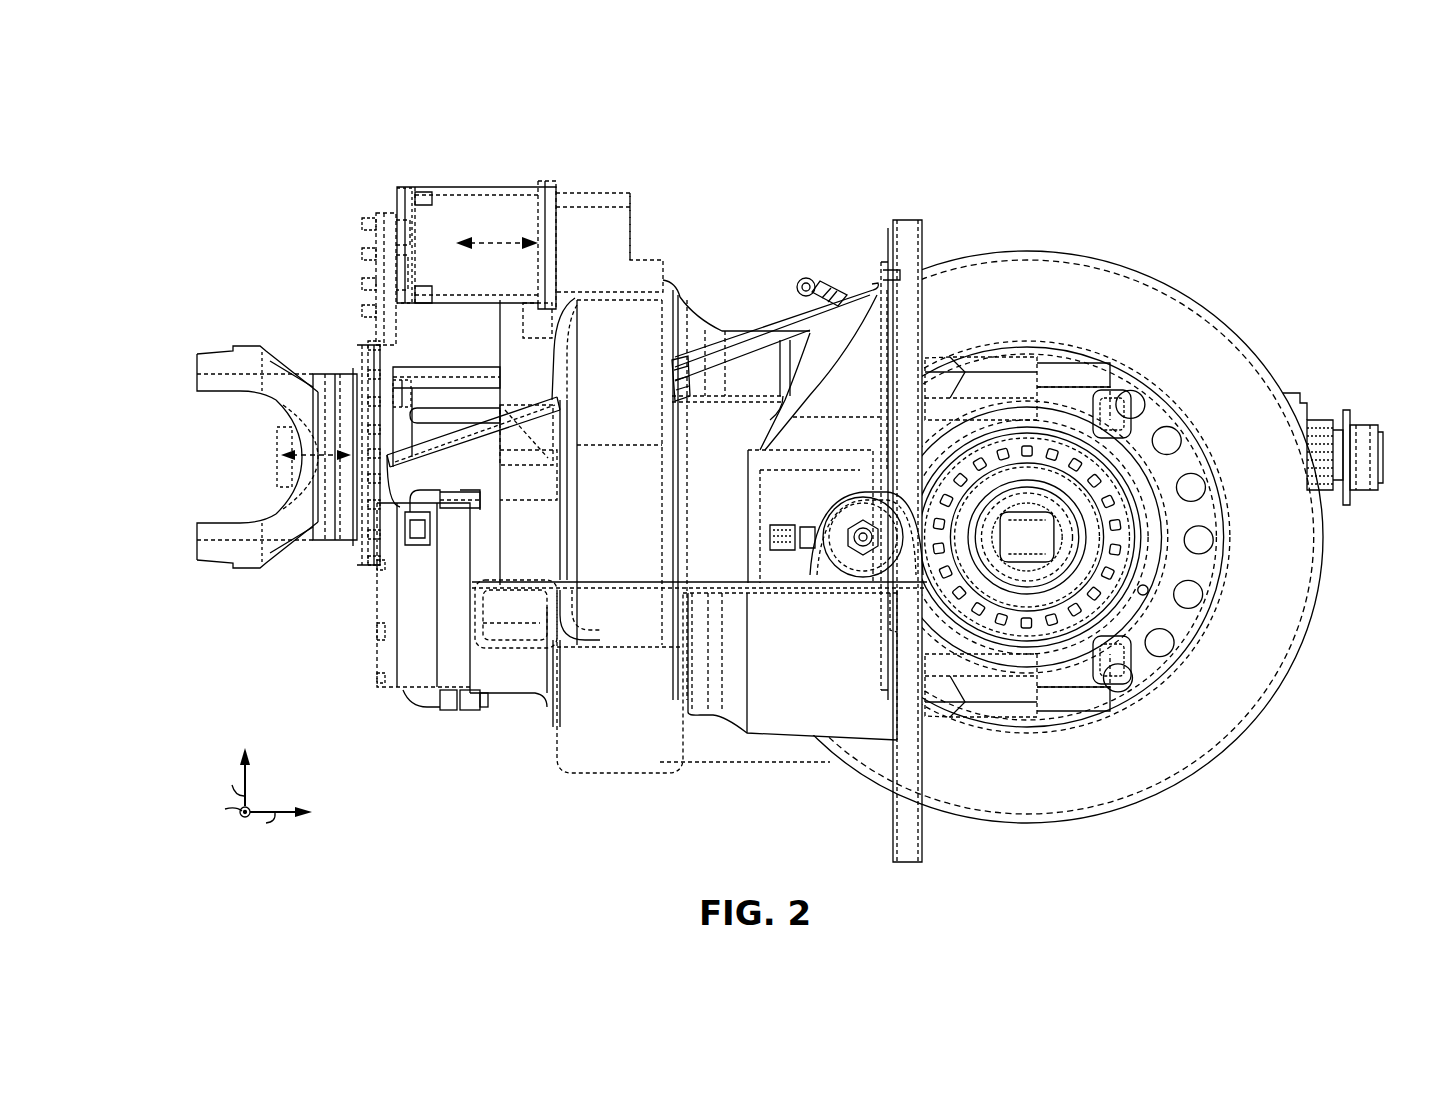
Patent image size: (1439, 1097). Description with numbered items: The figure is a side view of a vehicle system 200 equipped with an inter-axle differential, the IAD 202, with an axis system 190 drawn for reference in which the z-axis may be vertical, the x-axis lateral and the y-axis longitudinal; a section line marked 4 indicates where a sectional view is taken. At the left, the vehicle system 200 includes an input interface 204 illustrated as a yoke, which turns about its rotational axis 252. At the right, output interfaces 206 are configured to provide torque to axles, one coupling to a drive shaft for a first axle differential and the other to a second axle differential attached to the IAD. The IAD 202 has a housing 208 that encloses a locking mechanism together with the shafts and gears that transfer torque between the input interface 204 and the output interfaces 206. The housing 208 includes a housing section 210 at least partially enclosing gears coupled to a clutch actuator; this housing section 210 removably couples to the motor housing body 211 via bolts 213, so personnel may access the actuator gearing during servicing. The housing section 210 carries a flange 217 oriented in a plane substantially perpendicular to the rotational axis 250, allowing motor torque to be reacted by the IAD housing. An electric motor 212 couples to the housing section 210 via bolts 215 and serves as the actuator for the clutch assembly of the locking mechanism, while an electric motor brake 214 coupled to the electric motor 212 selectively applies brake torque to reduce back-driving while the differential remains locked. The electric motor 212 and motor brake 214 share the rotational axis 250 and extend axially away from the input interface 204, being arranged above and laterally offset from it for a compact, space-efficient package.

The section line 4- 4 is at (1395, 92).
The axis system 190 is at (281, 785).
The vehicle system 200 is at (148, 150).
The IAD 202 is at (163, 250).
The input interface 204 is at (145, 370).
The output interfaces 206 is at (1375, 402).
The housing 208 is at (736, 280).
The housing section 210 is at (400, 306).
The motor housing body 211 is at (452, 297).
The electric motor 212 is at (515, 176).
The bolts 213 is at (400, 386).
The electric motor brake 214 is at (650, 211).
The bolts 215 is at (426, 192).
The flange 217 is at (410, 168).
The rotational axis 250 is at (500, 240).
The rotational axis 252 is at (305, 396).